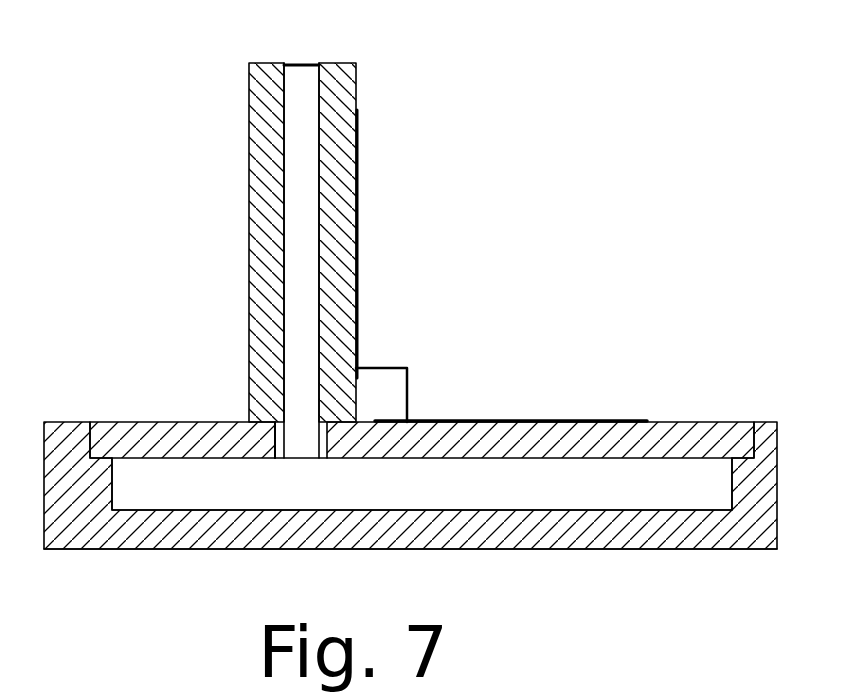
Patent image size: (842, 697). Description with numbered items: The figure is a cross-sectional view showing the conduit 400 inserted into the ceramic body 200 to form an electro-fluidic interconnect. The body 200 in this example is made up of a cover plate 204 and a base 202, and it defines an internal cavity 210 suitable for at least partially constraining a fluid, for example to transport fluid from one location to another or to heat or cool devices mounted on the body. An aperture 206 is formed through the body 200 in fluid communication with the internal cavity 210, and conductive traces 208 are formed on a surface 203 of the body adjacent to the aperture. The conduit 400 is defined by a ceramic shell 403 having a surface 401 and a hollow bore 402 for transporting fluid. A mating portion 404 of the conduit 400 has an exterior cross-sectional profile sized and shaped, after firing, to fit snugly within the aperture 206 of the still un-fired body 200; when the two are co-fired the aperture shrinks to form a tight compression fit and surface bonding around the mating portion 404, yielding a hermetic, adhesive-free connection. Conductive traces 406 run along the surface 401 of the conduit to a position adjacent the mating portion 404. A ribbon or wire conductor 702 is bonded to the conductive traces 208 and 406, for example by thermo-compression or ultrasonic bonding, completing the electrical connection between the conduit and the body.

The body 200 is at (176, 572).
The base 202 is at (636, 549).
The surface 203 is at (700, 422).
The cover plate 204 is at (136, 422).
The aperture 206 is at (272, 451).
The conductive traces 208 is at (540, 421).
The internal cavity 210 is at (427, 500).
The conduit 400 is at (234, 261).
The surface 401 is at (248, 168).
The hollow bore 402 is at (305, 65).
The shell 403 is at (277, 63).
The mating portion 404 is at (274, 446).
The conductive traces 406 is at (358, 258).
The wire conductor 702 is at (408, 390).